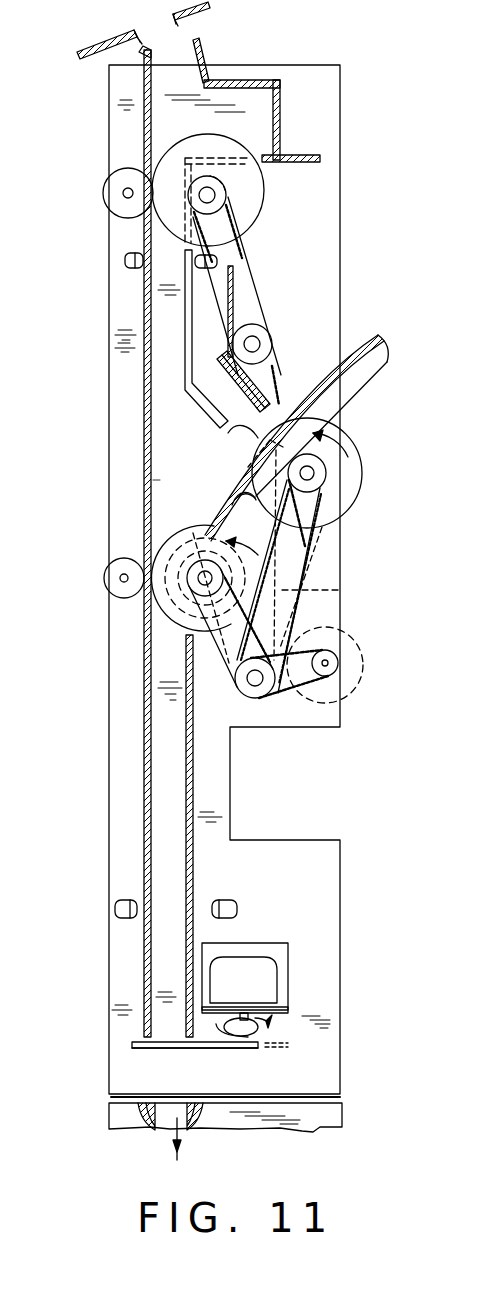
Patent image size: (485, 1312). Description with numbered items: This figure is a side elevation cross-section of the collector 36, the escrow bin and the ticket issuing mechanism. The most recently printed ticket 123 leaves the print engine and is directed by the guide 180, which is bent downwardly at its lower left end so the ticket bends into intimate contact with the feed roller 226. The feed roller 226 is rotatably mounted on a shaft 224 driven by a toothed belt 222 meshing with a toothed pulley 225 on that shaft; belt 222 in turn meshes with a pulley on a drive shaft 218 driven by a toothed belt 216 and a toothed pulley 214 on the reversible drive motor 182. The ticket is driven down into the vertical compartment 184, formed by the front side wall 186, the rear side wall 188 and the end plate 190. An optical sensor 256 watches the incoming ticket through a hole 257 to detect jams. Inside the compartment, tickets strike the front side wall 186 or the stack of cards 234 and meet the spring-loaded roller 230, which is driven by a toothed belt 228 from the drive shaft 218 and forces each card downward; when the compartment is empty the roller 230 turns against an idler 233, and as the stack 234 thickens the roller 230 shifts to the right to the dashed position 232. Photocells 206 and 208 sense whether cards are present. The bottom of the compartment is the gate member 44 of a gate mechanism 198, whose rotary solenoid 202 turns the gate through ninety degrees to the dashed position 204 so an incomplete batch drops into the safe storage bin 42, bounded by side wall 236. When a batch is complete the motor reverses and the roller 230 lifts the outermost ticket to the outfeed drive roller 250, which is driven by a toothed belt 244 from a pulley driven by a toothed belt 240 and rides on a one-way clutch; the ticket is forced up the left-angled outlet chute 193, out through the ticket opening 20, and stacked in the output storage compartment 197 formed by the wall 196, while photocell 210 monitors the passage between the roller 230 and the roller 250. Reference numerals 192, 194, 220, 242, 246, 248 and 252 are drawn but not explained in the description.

The ticket opening 20 is at (150, 35).
The collector 36 is at (314, 55).
The safe storage bin 42 is at (106, 1126).
The gate member 44 is at (205, 1049).
The ticket 123 is at (369, 400).
The guide 180 is at (381, 334).
The drive motor 182 is at (364, 660).
The vertical compartment 184 is at (151, 801).
The front side wall 186 is at (143, 440).
The rear side wall 188 is at (194, 802).
The end plate 190 is at (341, 236).
The lip 192 is at (242, 499).
The outlet chute 193 is at (135, 64).
The bracket 194 is at (200, 310).
The wall 196 is at (243, 80).
The output storage compartment 197 is at (255, 104).
The gate mechanism 198 is at (124, 1048).
The rotary solenoid 202 is at (257, 958).
The dashed-line gate position 204 is at (284, 1046).
The photocell 206 is at (235, 904).
The photocell 208 is at (118, 902).
The photocell 210 is at (218, 262).
The toothed pulley 214 is at (338, 678).
The toothed belt 216 is at (292, 692).
The drive shaft 218 is at (256, 686).
The lower pulley 220 is at (255, 698).
The toothed belt 222 is at (306, 567).
The shaft 224 is at (322, 473).
The toothed pulley 225 is at (326, 481).
The feed roller 226 is at (350, 441).
The toothed belt 228 is at (210, 647).
The roller 230 is at (182, 522).
The roller position 232 is at (342, 589).
The idler 233 is at (104, 580).
The stack of cards 234 is at (160, 487).
The side wall 236 is at (148, 1120).
The toothed belt 240 is at (271, 372).
The idler pulley 242 is at (266, 344).
The toothed belt 244 is at (256, 275).
The pulley hub 246 is at (226, 195).
The pulley shaft 248 is at (215, 200).
The outfeed drive roller 250 is at (243, 140).
The pressure roller 252 is at (105, 185).
The optical sensor 256 is at (234, 300).
The hole 257 is at (243, 436).